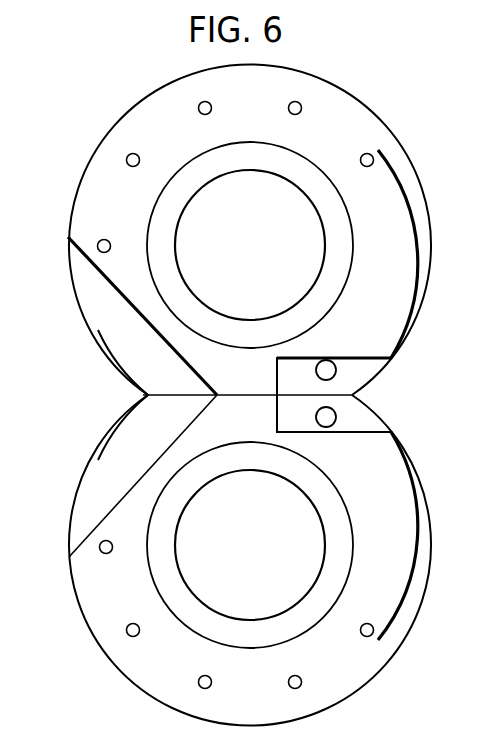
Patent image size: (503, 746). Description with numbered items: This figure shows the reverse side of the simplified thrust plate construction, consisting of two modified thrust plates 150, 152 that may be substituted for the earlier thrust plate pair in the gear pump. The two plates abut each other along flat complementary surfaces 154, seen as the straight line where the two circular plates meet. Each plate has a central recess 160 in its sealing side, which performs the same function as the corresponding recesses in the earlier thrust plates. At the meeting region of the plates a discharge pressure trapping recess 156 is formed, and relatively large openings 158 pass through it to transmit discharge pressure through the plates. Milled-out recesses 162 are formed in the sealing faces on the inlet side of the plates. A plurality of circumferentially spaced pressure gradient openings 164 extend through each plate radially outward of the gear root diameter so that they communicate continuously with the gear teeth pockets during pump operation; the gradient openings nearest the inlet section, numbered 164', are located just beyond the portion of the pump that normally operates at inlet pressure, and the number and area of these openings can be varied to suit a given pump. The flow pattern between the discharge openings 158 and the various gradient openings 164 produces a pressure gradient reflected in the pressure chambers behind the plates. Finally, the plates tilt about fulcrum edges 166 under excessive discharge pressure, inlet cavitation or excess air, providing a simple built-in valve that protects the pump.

The thrust plate 150 is at (398, 165).
The thrust plate 152 is at (415, 590).
The flat complementary surfaces 154 is at (240, 393).
The discharge pressure trapping recess 156 is at (367, 412).
The opening 158 is at (325, 360).
The recess 160 is at (337, 221).
The milled-out recess 162 is at (115, 345).
The pressure gradient opening 164 is at (227, 400).
The pressure gradient opening nearest the inlet section 164' is at (65, 400).
The fulcrum edge 166 is at (112, 287).